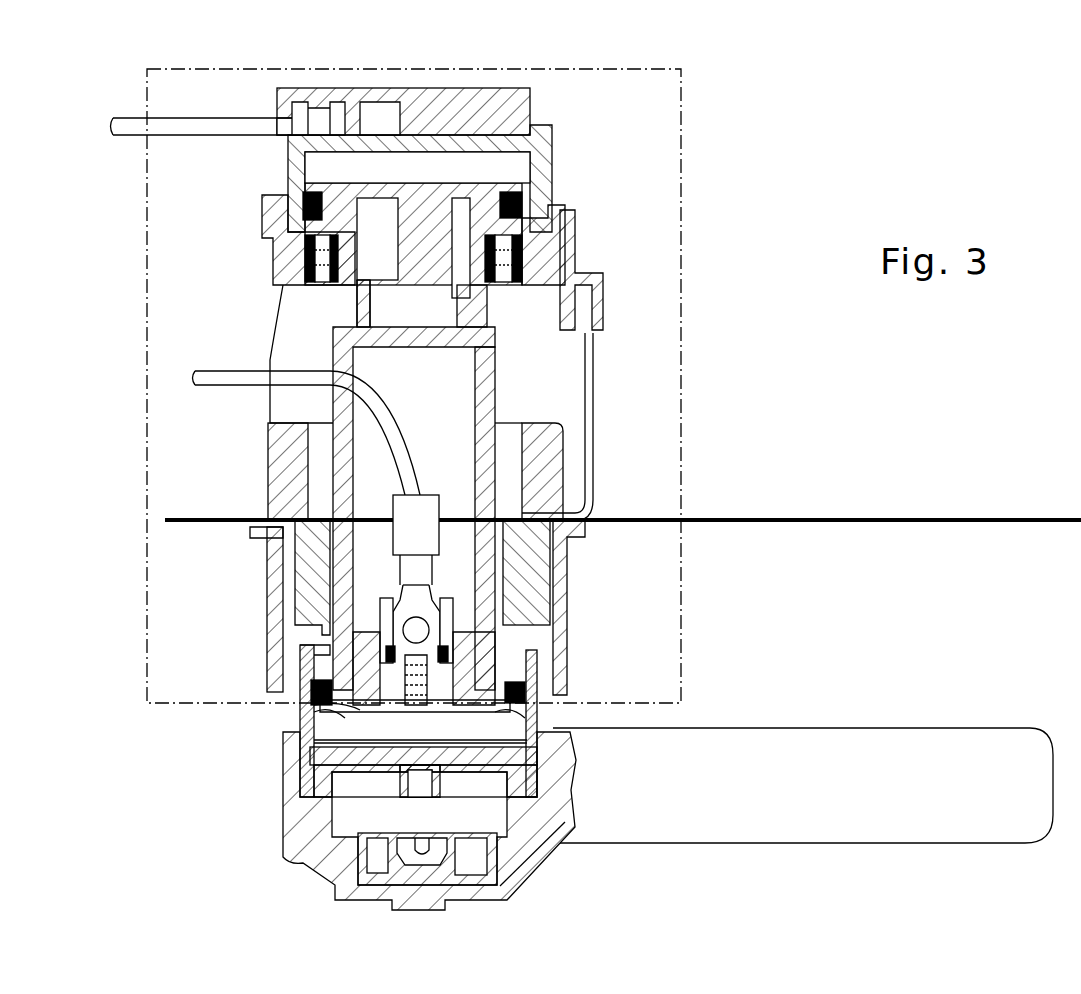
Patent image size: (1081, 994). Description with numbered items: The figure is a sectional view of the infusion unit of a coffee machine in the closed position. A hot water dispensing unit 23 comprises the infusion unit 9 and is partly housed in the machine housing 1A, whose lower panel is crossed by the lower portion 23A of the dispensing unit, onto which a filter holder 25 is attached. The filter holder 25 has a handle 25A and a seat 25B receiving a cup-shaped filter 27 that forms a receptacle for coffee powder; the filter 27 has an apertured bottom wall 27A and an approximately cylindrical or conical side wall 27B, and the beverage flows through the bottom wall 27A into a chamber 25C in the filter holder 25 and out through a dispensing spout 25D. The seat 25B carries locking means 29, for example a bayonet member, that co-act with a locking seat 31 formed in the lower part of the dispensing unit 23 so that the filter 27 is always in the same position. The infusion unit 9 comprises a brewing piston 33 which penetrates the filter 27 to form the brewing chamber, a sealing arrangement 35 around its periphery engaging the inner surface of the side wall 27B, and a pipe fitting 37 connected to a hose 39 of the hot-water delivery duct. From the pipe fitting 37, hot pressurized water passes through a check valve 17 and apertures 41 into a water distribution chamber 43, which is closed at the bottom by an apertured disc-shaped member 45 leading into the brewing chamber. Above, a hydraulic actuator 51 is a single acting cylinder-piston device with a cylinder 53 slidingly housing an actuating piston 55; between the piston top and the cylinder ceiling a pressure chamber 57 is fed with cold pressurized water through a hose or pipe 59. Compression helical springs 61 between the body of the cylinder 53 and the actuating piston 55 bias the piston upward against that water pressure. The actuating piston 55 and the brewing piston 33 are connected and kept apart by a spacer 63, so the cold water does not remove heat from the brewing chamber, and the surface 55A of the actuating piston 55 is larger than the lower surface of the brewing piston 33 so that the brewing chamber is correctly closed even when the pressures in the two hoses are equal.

The housing 1A is at (853, 518).
The infusion unit 9 is at (596, 405).
The check valve 17 is at (425, 628).
The hot water dispensing unit 23 is at (690, 251).
The lower portion of the water dispensing unit 23A is at (265, 601).
The filter holder 25 is at (803, 746).
The handle 25A is at (850, 748).
The seat 25B is at (540, 720).
The chamber 25C is at (330, 800).
The dispensing spout 25D is at (445, 842).
The filter 27 is at (300, 748).
The bottom wall 27A is at (300, 770).
The side wall 27B is at (555, 745).
The locking means 29 is at (292, 655).
The locking seat 31 is at (300, 690).
The brewing piston 33 is at (562, 632).
The sealing arrangement 35 is at (540, 688).
The pipe fitting 37 is at (432, 510).
The hose 39 is at (386, 422).
The apertures 41 is at (396, 708).
The water distribution chamber 43 is at (310, 710).
The apertured disc-shaped member 45 is at (482, 712).
The hydraulic actuator 51 is at (370, 183).
The cylinder 53 is at (482, 128).
The actuating piston 55 is at (527, 170).
The surface of the actuating piston 55A is at (473, 177).
The pressure chamber 57 is at (320, 165).
The hose or pipe 59 is at (130, 138).
The compression helical springs 61 is at (305, 262).
The spacer 63 is at (490, 386).